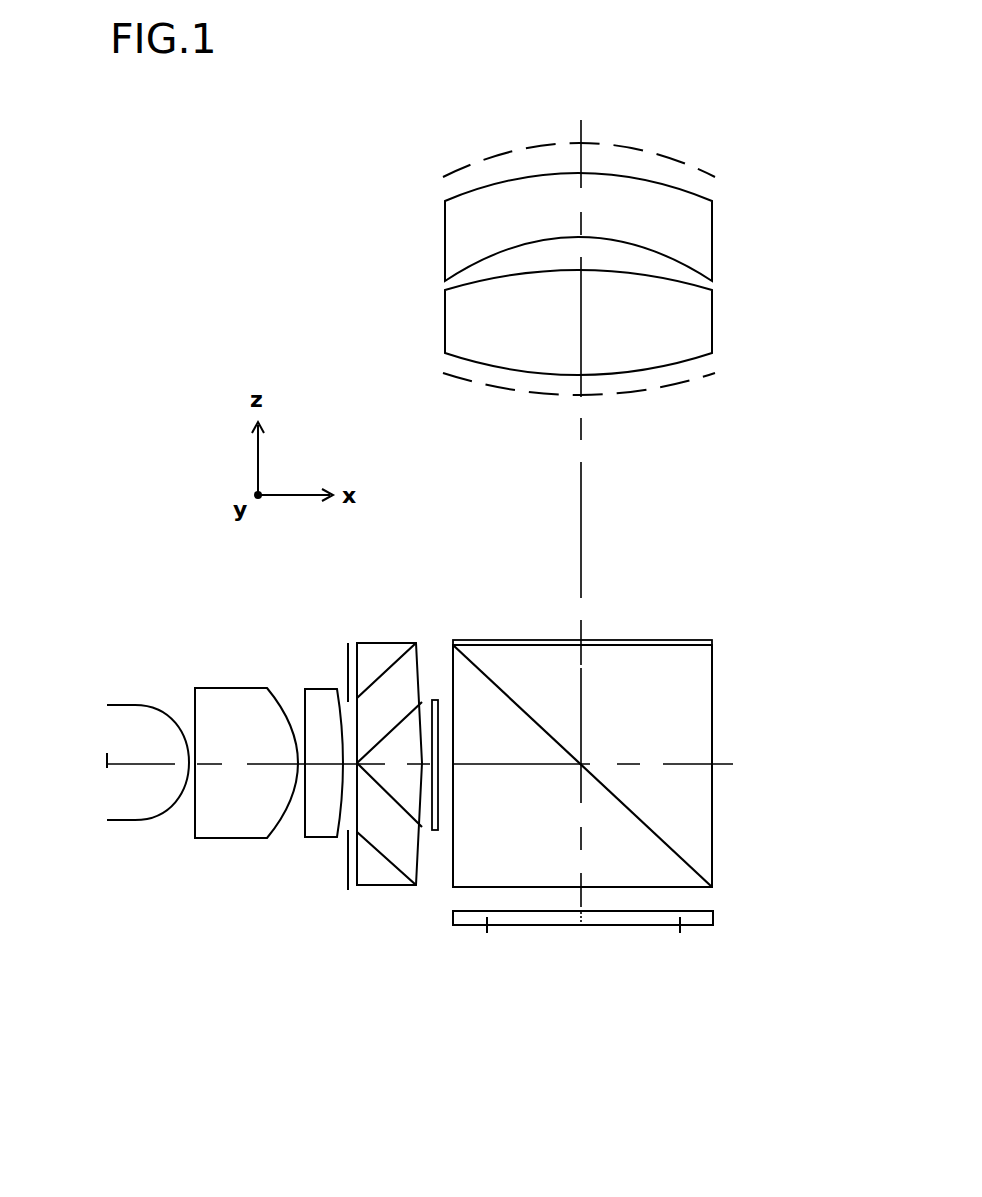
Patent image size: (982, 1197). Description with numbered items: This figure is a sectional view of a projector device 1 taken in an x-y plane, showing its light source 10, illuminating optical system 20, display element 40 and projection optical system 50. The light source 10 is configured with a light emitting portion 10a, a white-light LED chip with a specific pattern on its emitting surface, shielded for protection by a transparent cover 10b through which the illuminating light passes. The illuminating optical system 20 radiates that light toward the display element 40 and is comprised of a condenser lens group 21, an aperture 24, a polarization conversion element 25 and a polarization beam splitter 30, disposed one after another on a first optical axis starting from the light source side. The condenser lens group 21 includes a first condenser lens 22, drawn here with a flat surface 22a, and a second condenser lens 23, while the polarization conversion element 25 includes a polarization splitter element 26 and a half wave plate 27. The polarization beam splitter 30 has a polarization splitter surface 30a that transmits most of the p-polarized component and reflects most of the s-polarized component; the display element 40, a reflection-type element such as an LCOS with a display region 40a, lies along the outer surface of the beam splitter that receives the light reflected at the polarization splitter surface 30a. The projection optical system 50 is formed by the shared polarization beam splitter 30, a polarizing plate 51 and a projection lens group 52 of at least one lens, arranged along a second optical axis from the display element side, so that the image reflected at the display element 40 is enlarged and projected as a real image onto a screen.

The projector device 1 is at (292, 342).
The light source 10 is at (140, 808).
The light emitting portion 10a is at (107, 768).
The cover 10b is at (157, 820).
The illuminating optical system 20 is at (438, 831).
The condenser lens group 21 is at (265, 817).
The first condenser lens 22 is at (242, 798).
The flat surface of lens 22a is at (195, 838).
The second condenser lens 23 is at (309, 799).
The aperture 24 is at (348, 890).
The polarization conversion element 25 is at (400, 812).
The polarization splitter element 26 is at (380, 885).
The half wave plate 27 is at (435, 830).
The polarization beam splitter 30 is at (618, 766).
The polarization splitter surface 30a is at (688, 847).
The display element 40 is at (623, 944).
The image display area 40a is at (583, 947).
The projection optical system 50 is at (647, 506).
The polarizing plate 51 is at (677, 636).
The projection lens group 52 is at (614, 261).